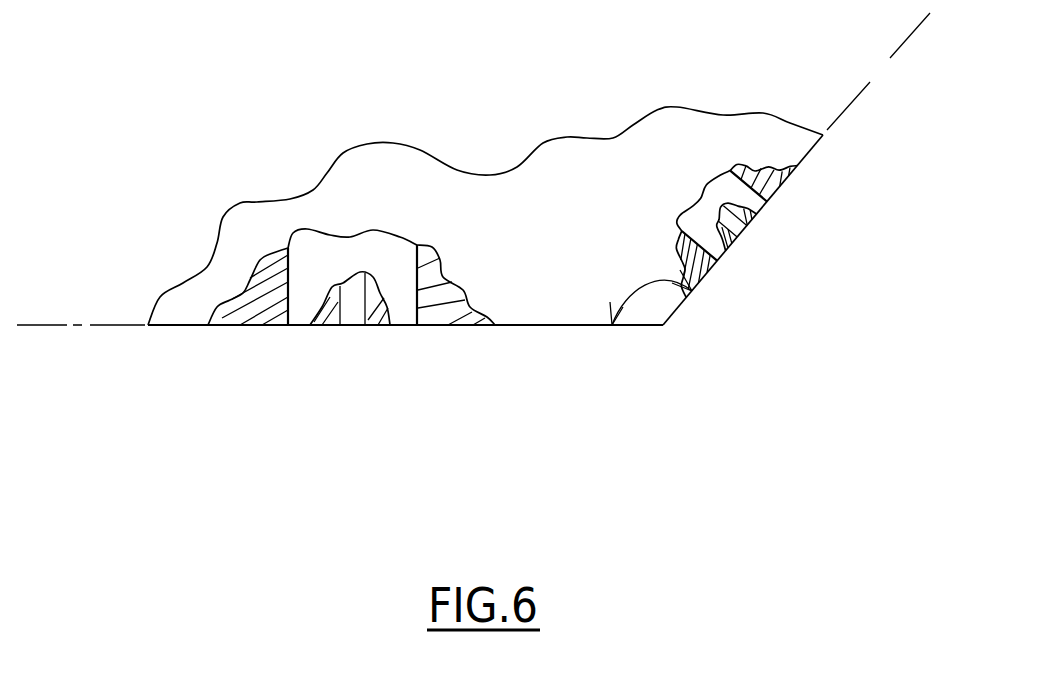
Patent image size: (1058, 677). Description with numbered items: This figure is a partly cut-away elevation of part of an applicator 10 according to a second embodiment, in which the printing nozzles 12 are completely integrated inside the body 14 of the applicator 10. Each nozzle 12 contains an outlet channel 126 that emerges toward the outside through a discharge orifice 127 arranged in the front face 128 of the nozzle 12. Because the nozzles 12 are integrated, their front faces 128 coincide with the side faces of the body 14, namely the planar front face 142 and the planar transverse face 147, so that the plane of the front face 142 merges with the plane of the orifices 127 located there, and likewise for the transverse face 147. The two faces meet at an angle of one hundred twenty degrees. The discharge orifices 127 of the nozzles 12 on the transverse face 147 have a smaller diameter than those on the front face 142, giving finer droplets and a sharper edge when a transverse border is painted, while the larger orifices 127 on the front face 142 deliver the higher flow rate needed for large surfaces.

The applicator 10 is at (221, 131).
The nozzle 12 is at (388, 247).
The body 14 is at (567, 162).
The outlet channel 126 is at (350, 237).
The discharge orifice 127 is at (350, 237).
The front face of the nozzle 128 is at (297, 342).
The front face 142 is at (177, 340).
The transverse surface 147 is at (808, 188).